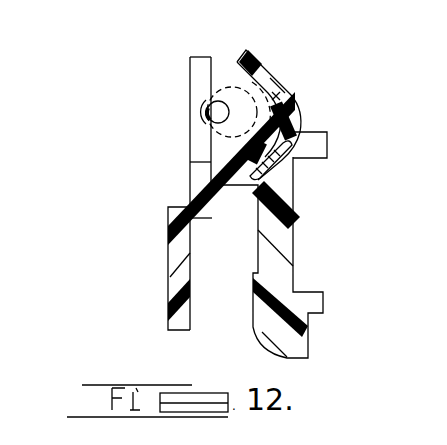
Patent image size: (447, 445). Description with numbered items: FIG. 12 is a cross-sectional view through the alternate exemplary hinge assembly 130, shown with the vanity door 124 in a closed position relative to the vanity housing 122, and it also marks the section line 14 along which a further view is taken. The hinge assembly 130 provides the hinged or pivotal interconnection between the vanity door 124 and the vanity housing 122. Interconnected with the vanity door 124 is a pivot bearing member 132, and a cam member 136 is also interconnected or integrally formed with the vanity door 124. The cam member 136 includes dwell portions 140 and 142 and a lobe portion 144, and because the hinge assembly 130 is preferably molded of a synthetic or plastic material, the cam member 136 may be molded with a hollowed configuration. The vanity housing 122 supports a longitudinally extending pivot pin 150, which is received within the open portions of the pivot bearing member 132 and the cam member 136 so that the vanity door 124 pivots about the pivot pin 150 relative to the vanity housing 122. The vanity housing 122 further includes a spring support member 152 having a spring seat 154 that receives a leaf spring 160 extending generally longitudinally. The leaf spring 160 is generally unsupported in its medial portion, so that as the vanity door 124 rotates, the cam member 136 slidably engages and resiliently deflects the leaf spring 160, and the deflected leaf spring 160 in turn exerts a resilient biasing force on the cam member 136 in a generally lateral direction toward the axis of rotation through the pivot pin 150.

The section line 14- 14 is at (263, 26).
The vanity housing 122 is at (267, 313).
The vanity door 124 is at (176, 257).
The hinge assembly 130 is at (335, 92).
The pivot bearing member 132 is at (292, 73).
The cam member 136 is at (258, 52).
The dwell portion 140 is at (265, 62).
The dwell portion 142 is at (296, 168).
The lobe portion 144 is at (297, 109).
The pivot pin 150 is at (218, 112).
The spring support member 152 is at (294, 143).
The spring seat 154 is at (296, 153).
The leaf spring 160 is at (253, 173).